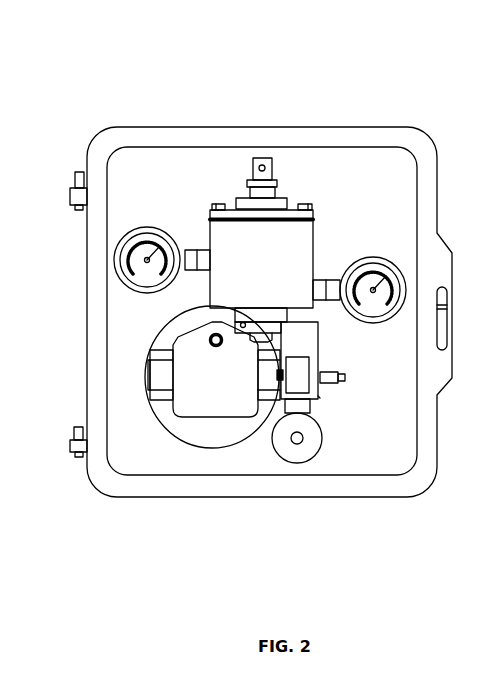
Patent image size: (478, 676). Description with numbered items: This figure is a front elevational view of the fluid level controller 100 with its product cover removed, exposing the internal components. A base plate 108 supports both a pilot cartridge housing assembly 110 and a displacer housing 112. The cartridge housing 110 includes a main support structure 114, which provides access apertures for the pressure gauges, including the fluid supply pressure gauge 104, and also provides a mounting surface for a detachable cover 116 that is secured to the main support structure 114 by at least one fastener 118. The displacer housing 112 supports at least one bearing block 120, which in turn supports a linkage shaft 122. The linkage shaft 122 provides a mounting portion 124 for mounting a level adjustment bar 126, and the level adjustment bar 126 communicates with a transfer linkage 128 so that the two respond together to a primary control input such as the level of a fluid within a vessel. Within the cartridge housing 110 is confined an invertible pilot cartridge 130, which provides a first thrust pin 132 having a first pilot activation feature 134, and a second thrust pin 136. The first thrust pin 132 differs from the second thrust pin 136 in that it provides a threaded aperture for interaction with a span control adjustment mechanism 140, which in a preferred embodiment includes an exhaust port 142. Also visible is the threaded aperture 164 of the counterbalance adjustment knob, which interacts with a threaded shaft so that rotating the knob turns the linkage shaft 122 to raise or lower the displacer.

The fluid level controller 100 is at (192, 56).
The fluid supply pressure gauge 104 is at (147, 292).
The base plate 108 is at (372, 135).
The pilot cartridge housing assembly 110 is at (278, 195).
The displacer housing 112 is at (203, 400).
The main support structure 114 is at (292, 256).
The detachable cover 116 is at (309, 214).
The fastener 118 is at (213, 207).
The bearing block 120 is at (152, 354).
The linkage shaft 122 is at (327, 383).
The mounting portion 124 is at (320, 398).
The level adjustment bar 126 is at (310, 406).
The transfer linkage 128 is at (300, 338).
The invertible pilot cartridge 130 is at (293, 146).
The first thrust pin 132 is at (306, 207).
The first pilot activation feature 134 is at (278, 192).
The second thrust pin 136 is at (246, 337).
The span control adjustment mechanism 140 is at (247, 188).
The exhaust port 142 is at (283, 158).
The threaded aperture 164 is at (298, 445).